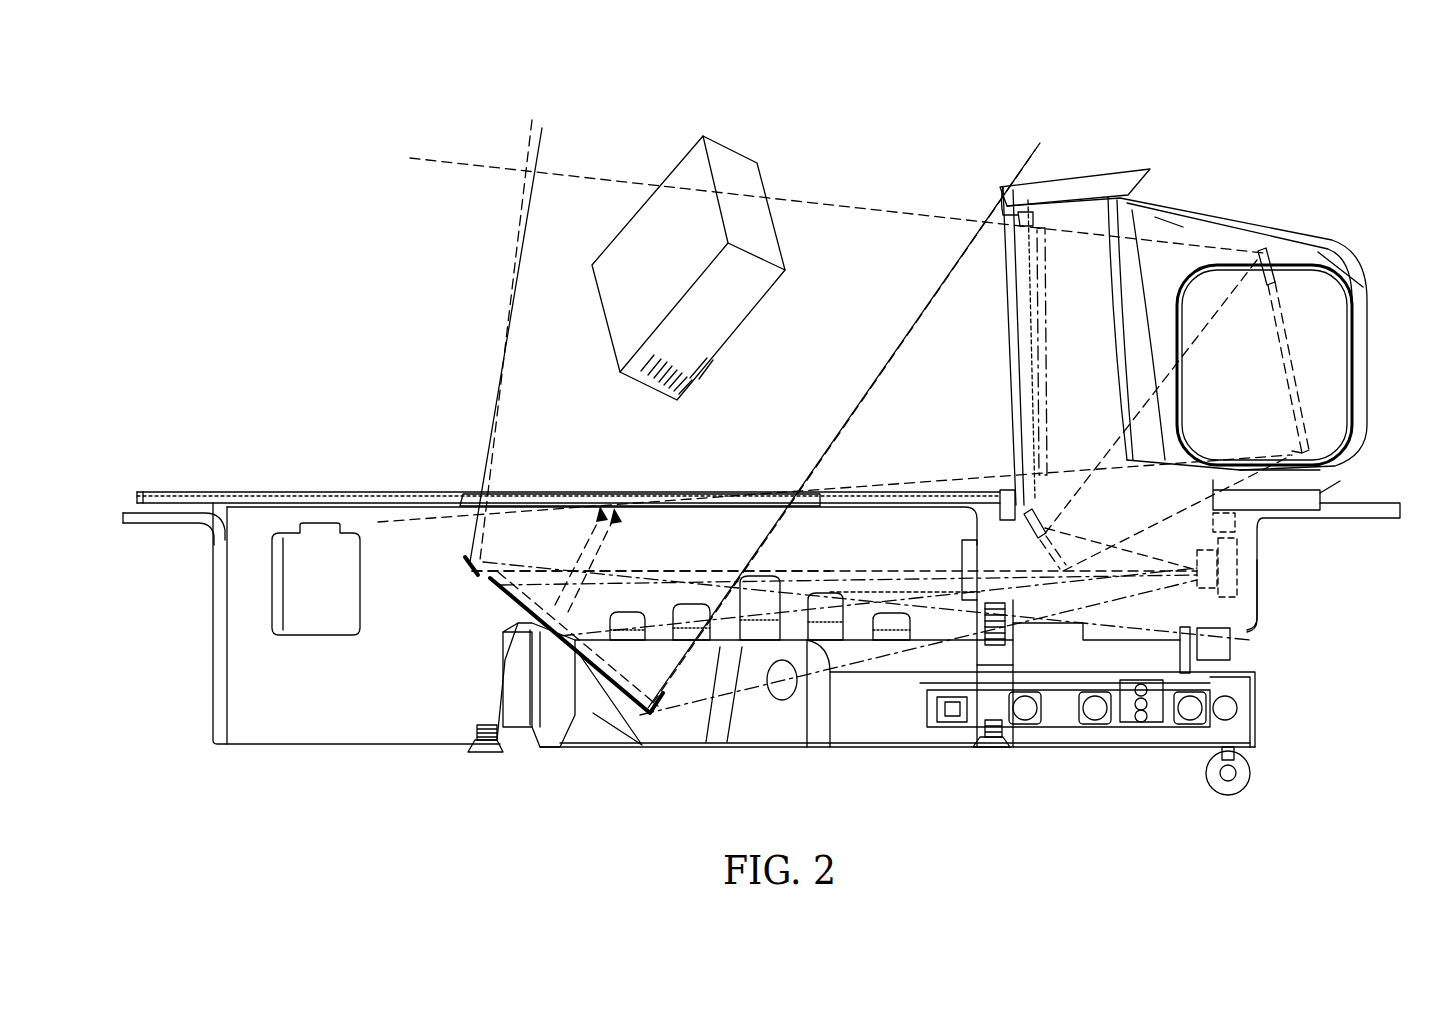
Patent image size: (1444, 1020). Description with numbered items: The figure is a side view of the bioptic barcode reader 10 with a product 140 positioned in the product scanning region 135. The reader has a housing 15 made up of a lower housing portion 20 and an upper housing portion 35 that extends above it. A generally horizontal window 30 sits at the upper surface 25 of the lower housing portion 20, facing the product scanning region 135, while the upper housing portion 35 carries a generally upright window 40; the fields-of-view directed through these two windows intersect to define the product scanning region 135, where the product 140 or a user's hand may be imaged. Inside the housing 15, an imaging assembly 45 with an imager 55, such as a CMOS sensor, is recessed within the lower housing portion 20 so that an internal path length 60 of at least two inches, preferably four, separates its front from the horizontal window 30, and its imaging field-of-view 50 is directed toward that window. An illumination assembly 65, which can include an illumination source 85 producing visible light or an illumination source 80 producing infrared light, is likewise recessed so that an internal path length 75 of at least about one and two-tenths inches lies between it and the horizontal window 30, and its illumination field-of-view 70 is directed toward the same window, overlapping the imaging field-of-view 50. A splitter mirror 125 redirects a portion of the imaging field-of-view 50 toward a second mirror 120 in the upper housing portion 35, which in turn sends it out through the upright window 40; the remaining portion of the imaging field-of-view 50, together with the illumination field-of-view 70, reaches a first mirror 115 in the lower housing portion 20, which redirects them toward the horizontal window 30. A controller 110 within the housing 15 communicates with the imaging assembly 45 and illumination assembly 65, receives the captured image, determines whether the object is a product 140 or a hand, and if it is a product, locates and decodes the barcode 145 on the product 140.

The bioptic barcode reader 10 is at (1180, 100).
The housing 15 is at (186, 641).
The lower housing portion 20 is at (345, 748).
The upper surface 25 is at (300, 490).
The horizontal window 30 is at (553, 492).
The upper housing portion 35 is at (1262, 230).
The upright window 40 is at (1040, 408).
The imaging assembly 45 is at (1238, 562).
The imaging field-of-view 50 is at (690, 573).
The imager 55 is at (1212, 580).
The internal path length 60 is at (908, 592).
The illumination assembly 65 is at (1240, 653).
The illumination field-of-view 70 is at (870, 678).
The internal path length 75 is at (930, 632).
The illumination source 80 is at (1250, 633).
The illumination source 85 is at (1232, 657).
The controller 110 is at (1235, 523).
The first mirror 115 is at (493, 593).
The second mirror 120 is at (1287, 322).
The splitter mirror 125 is at (1040, 545).
The product scanning region 135 is at (790, 447).
The product 140 is at (682, 160).
The barcode 145 is at (692, 376).